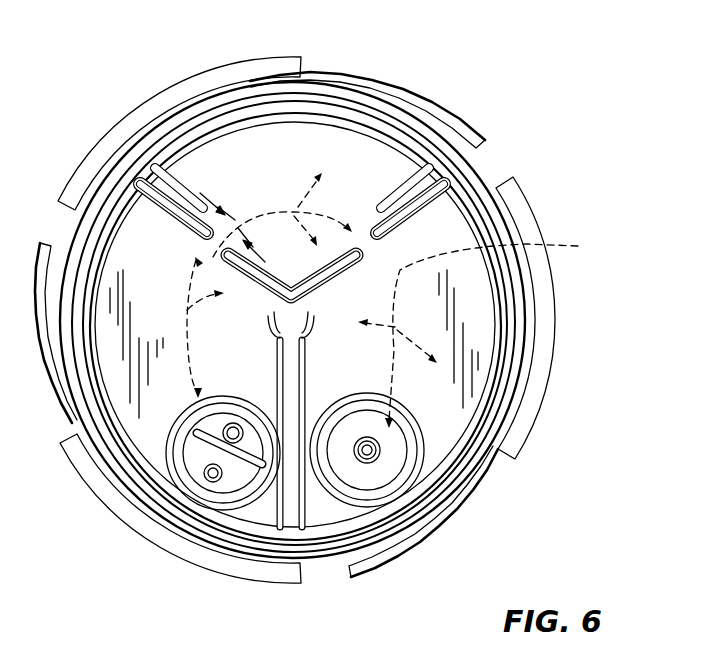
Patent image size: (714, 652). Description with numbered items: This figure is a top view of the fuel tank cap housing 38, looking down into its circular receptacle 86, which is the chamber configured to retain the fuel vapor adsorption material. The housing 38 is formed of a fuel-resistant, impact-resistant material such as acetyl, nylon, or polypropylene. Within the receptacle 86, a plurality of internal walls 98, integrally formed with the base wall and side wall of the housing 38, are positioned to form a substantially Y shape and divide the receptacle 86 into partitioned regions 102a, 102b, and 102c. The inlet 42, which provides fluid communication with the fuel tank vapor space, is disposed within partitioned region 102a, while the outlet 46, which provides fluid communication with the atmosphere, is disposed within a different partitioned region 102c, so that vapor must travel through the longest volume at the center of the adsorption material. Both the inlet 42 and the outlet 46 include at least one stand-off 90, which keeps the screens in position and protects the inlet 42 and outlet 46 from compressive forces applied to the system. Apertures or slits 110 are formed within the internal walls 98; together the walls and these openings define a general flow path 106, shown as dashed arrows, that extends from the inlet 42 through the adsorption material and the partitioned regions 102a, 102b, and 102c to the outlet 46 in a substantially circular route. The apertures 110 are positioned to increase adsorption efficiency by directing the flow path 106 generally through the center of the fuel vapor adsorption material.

The housing 38 is at (517, 321).
The inlet 42 is at (247, 464).
The outlet 46 is at (393, 461).
The receptacle 86 is at (243, 150).
The stand-off 90 is at (205, 471).
The internal walls 98 is at (417, 197).
The partitioned region 102a is at (262, 372).
The partitioned region 102b is at (393, 187).
The partitioned region 102c is at (376, 372).
The general flow path 106 is at (404, 300).
The apertures or slits 110 is at (211, 200).